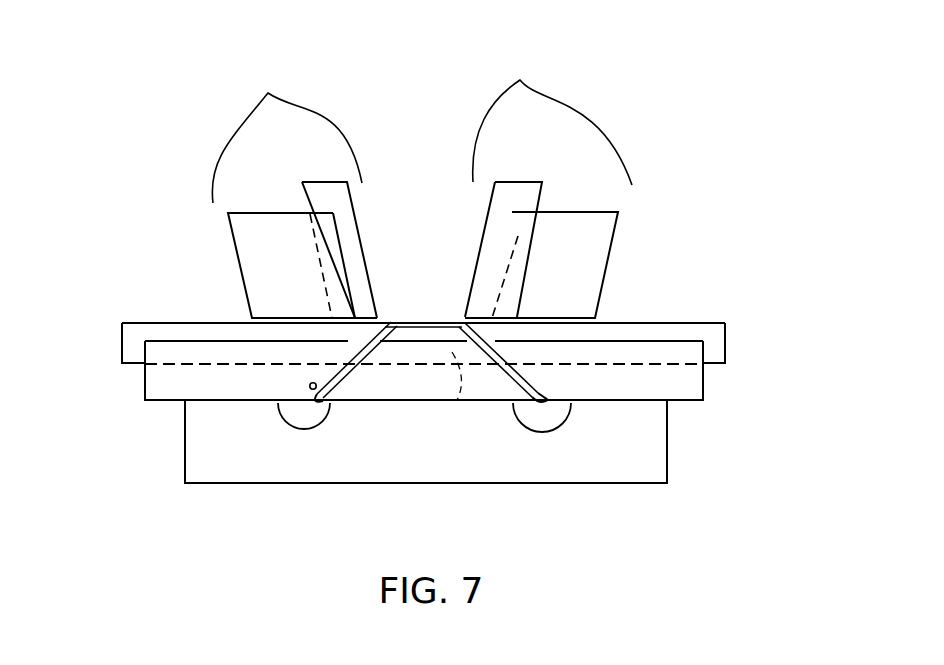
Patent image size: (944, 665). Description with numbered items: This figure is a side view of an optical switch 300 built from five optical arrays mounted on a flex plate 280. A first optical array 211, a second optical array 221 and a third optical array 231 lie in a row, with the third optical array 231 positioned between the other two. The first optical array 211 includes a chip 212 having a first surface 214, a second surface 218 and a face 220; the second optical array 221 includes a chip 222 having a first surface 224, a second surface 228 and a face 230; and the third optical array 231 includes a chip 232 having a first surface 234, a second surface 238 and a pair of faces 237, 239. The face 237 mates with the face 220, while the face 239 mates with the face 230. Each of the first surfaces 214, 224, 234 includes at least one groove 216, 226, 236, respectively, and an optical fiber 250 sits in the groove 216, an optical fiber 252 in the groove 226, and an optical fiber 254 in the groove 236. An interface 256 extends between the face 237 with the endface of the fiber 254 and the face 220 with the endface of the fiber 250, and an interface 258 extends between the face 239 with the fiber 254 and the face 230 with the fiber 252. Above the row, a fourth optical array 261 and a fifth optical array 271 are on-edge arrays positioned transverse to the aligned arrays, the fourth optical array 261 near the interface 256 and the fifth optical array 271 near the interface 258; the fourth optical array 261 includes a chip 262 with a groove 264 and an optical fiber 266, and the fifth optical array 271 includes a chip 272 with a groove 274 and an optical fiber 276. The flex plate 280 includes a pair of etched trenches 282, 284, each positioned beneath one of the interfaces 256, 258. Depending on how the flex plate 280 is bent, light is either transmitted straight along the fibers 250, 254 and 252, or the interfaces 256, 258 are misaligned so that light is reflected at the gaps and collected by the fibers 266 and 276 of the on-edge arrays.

The optical switch 300 is at (658, 78).
The fifth optical array 271 is at (264, 191).
The fourth optical array 261 is at (584, 183).
The chip 272 is at (242, 227).
The optical fiber 276 is at (327, 190).
The groove 274 is at (310, 214).
The chip 262 is at (600, 227).
The optical fiber 266 is at (519, 188).
The groove 264 is at (518, 236).
The second optical array 221 is at (136, 337).
The first optical array 211 is at (688, 333).
The optical fiber 252 is at (172, 335).
The first surface 224 is at (243, 327).
The optical fiber 250 is at (672, 326).
The first surface 214 is at (625, 323).
The third optical array 231 is at (398, 334).
The optical fiber 254 is at (418, 338).
The first surface 234 is at (442, 323).
The chip 232 is at (400, 395).
The face 230 is at (310, 386).
The chip 222 is at (155, 385).
The chip 212 is at (684, 386).
The groove 216 is at (655, 352).
The groove 226 is at (190, 364).
The groove 236 is at (449, 407).
The face 220 is at (586, 400).
The second surface 218 is at (642, 403).
The second surface 228 is at (187, 452).
The flex plate 280 is at (233, 470).
The etched trench 284 is at (291, 428).
The etched trench 282 is at (552, 420).
The face 239 is at (322, 406).
The interface 258 is at (340, 372).
The second surface 238 is at (388, 402).
The interface 256 is at (507, 403).
The face 237 is at (538, 405).